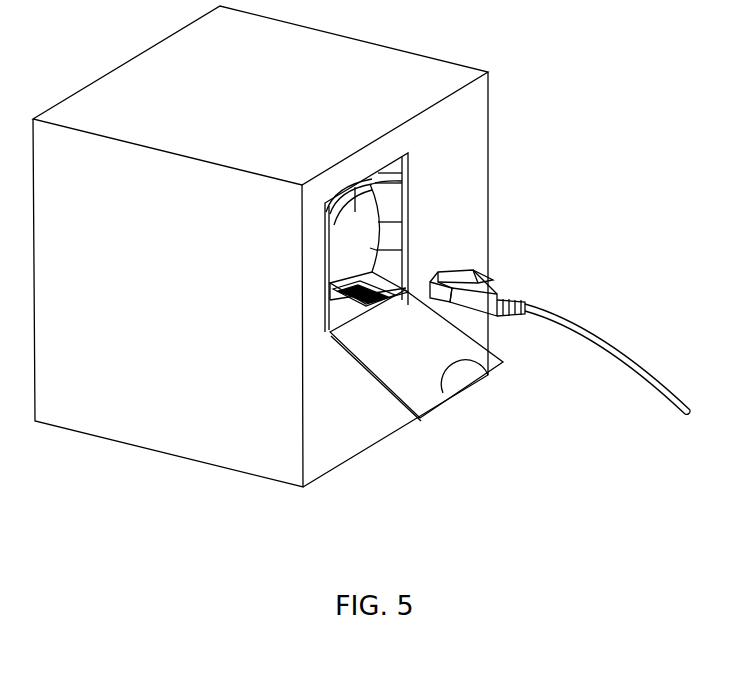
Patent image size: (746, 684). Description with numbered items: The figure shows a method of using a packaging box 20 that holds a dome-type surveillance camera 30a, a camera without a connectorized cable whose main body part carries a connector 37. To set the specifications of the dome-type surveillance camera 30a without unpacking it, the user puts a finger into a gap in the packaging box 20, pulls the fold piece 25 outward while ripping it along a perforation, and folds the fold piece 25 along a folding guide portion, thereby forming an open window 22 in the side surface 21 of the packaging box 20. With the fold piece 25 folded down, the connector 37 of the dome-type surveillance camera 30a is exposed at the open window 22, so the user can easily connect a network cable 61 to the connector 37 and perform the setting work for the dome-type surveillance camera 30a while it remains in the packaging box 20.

The packaging box 20 is at (163, 458).
The side surface 21 is at (348, 443).
The open window 22 is at (345, 258).
The fold piece 25 is at (405, 400).
The dome-type surveillance camera 30a is at (356, 186).
The connector 37 is at (334, 304).
The network cable 61 is at (625, 343).